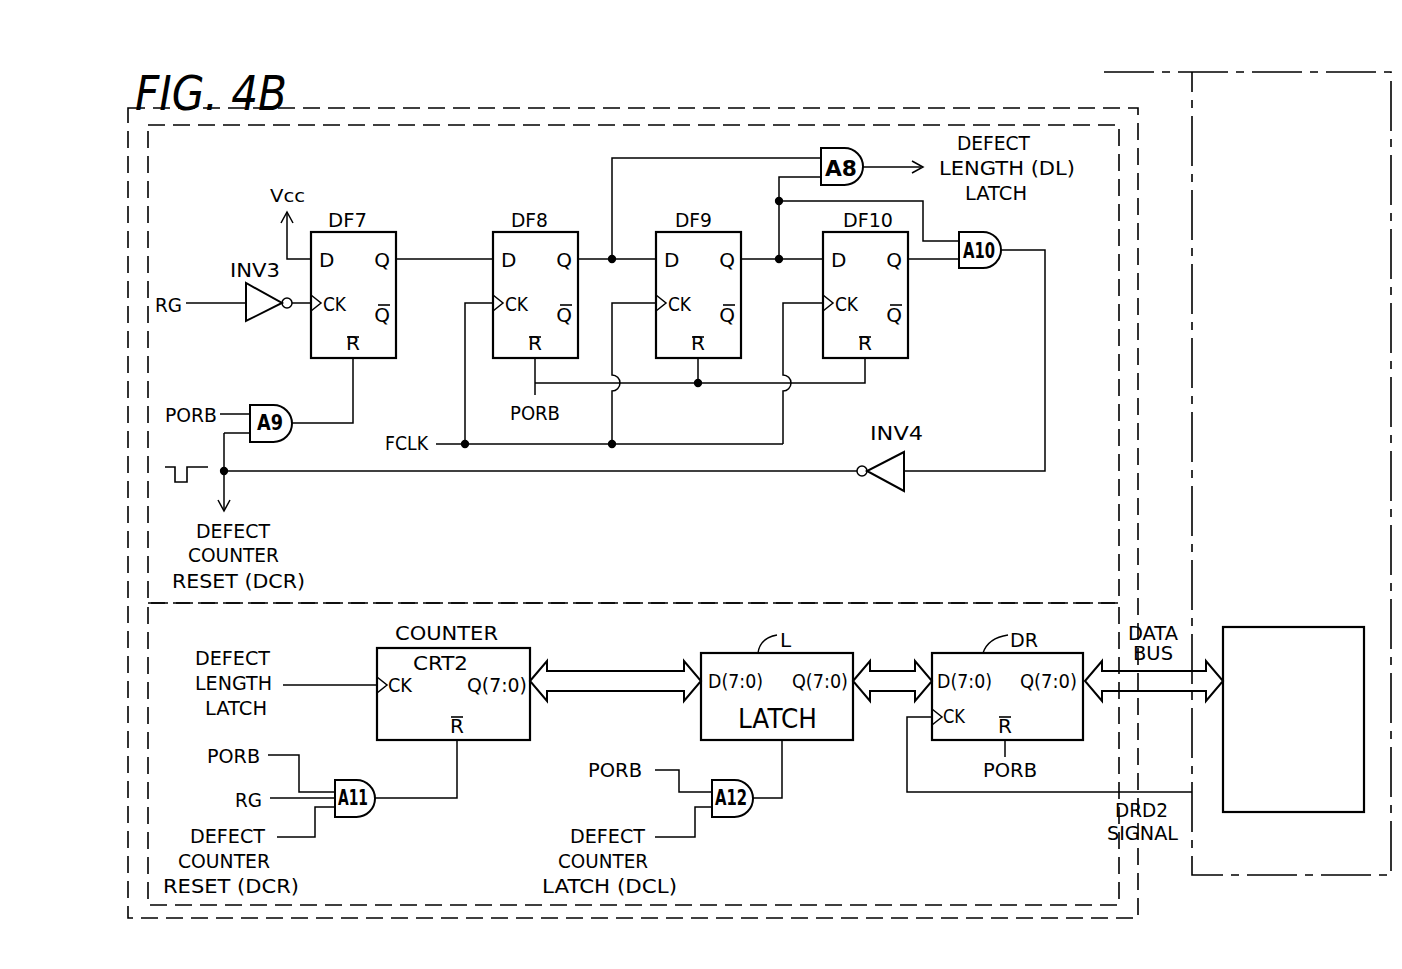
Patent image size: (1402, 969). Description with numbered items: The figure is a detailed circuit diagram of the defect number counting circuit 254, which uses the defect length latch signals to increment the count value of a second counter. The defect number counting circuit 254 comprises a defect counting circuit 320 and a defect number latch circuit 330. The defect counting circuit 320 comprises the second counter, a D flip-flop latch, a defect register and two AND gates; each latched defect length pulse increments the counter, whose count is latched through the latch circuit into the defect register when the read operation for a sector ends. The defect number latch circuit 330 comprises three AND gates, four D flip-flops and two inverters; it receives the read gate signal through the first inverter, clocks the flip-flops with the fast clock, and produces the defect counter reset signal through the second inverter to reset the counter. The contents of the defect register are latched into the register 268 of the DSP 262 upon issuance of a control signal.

The defect number counting circuit 254 is at (803, 109).
The defect number latch circuit 330 is at (645, 125).
The defect counting circuit 320 is at (1120, 882).
The DSP 262 is at (1307, 362).
The register 268 is at (1318, 751).